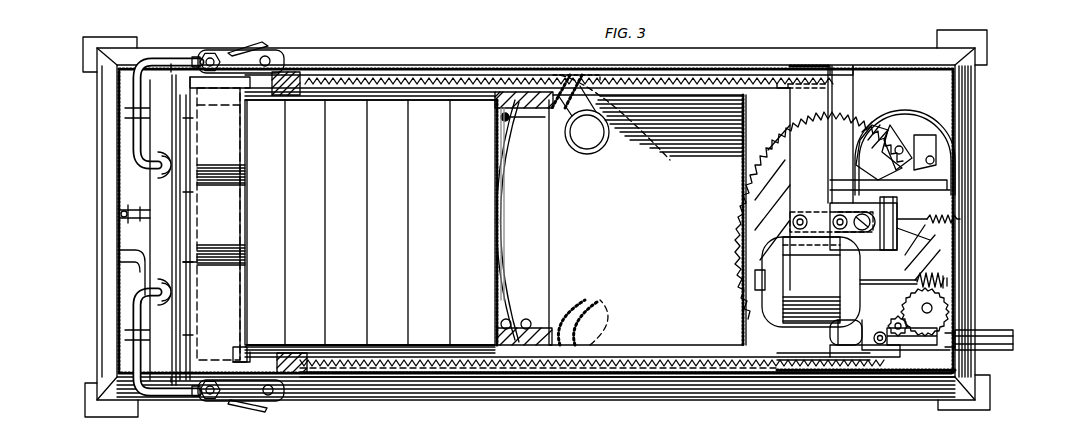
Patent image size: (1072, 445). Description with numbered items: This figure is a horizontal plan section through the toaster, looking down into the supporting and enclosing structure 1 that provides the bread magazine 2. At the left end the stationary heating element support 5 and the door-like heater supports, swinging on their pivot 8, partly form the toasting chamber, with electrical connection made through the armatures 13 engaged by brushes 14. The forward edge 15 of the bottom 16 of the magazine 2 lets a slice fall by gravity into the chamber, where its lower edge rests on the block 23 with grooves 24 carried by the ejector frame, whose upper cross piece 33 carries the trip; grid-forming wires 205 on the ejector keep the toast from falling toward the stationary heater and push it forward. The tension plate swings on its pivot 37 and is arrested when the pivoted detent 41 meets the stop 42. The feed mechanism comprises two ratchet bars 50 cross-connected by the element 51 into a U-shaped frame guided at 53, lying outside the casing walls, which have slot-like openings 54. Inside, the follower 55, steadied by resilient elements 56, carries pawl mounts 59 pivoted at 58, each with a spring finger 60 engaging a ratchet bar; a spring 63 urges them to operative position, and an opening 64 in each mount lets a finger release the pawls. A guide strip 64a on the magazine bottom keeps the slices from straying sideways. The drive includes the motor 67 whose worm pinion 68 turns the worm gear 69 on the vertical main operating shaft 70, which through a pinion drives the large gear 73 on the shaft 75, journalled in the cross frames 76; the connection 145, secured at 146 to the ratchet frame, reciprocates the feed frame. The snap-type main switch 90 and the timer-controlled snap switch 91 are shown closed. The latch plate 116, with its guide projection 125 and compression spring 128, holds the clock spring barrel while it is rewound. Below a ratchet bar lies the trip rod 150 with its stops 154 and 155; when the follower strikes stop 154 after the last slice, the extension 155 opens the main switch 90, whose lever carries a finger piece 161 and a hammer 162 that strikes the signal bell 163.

The supporting and enclosing structure 1 is at (958, 103).
The magazine 2 is at (712, 115).
The stationary heating element support 5 is at (155, 107).
The pivot 8 is at (268, 395).
The armature 13 is at (272, 47).
The brush 14 is at (243, 44).
The forward edge 15 is at (245, 100).
The bottom 16 is at (388, 100).
The block 23 is at (228, 154).
The grooves 24 is at (230, 200).
The cross piece 33 is at (185, 178).
The pivot 37 is at (171, 57).
The pivoted detent 41 is at (128, 212).
The stop 42 is at (125, 262).
The ratchet bars 50 is at (458, 78).
The element 51 is at (822, 100).
The guide 53 is at (290, 72).
The slot-like openings 54 is at (352, 92).
The follower 55 is at (540, 233).
The resilient elements 56 is at (490, 92).
The pivot 58 is at (516, 140).
The pawl mounts 59 is at (566, 72).
The spring finger 60 is at (600, 337).
The spring 63 is at (540, 300).
The opening 64 is at (600, 150).
The guide strip 64a is at (392, 347).
The motor 67 is at (795, 280).
The worm pinion 68 is at (910, 280).
The worm gear 69 is at (930, 306).
The main operating shaft 70 is at (945, 296).
The gear 73 is at (762, 148).
The shaft 75 is at (838, 215).
The cross frames 76 is at (848, 95).
The main switch 90 is at (900, 350).
The snap switch 91 is at (952, 140).
The latch plate 116 is at (900, 203).
The guide projection 125 is at (908, 230).
The spring 128 is at (900, 213).
The connection 145 is at (830, 245).
The connection point 146 is at (800, 218).
The trip rod 150 is at (843, 357).
The stop 154 is at (235, 352).
The extension 155 is at (942, 315).
The finger piece 161 is at (1012, 335).
The hammer 162 is at (895, 320).
The signal bell 163 is at (830, 338).
The grid-forming wire 205 is at (195, 262).